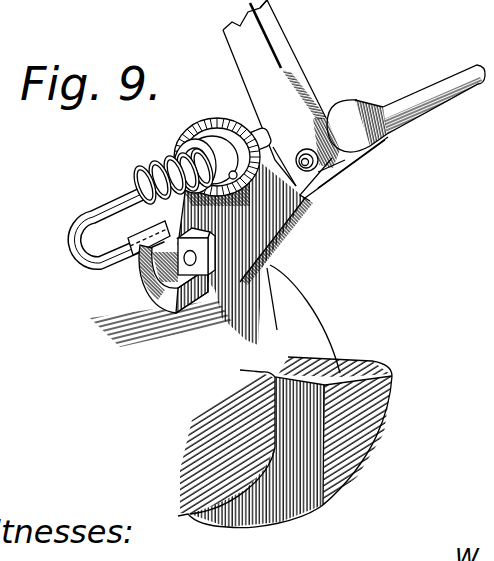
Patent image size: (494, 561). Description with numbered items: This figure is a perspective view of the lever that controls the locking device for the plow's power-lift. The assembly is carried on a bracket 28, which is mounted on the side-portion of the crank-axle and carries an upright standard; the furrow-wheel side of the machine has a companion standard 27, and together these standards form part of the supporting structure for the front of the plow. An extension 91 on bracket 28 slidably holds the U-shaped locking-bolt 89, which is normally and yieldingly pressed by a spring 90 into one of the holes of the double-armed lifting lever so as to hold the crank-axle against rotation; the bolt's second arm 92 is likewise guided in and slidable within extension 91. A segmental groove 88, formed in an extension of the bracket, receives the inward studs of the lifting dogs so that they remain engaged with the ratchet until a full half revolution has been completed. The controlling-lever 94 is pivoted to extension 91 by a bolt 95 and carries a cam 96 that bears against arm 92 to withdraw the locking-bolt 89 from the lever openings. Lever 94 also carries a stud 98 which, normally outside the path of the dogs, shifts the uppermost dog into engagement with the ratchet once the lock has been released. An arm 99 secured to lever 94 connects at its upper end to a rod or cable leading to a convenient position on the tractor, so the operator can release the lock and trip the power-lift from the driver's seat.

The standard 27 is at (377, 6).
The bracket 28 is at (227, 440).
The segmental groove 88 is at (343, 364).
The locking-bolt 89 is at (103, 202).
The spring 90 is at (143, 168).
The extension 91 is at (188, 136).
The arm 92 is at (107, 278).
The controlling-lever 94 is at (287, 210).
The bolt 95 is at (208, 262).
The cam 96 is at (147, 272).
The stud 98 is at (413, 93).
The arm 99 is at (280, 63).